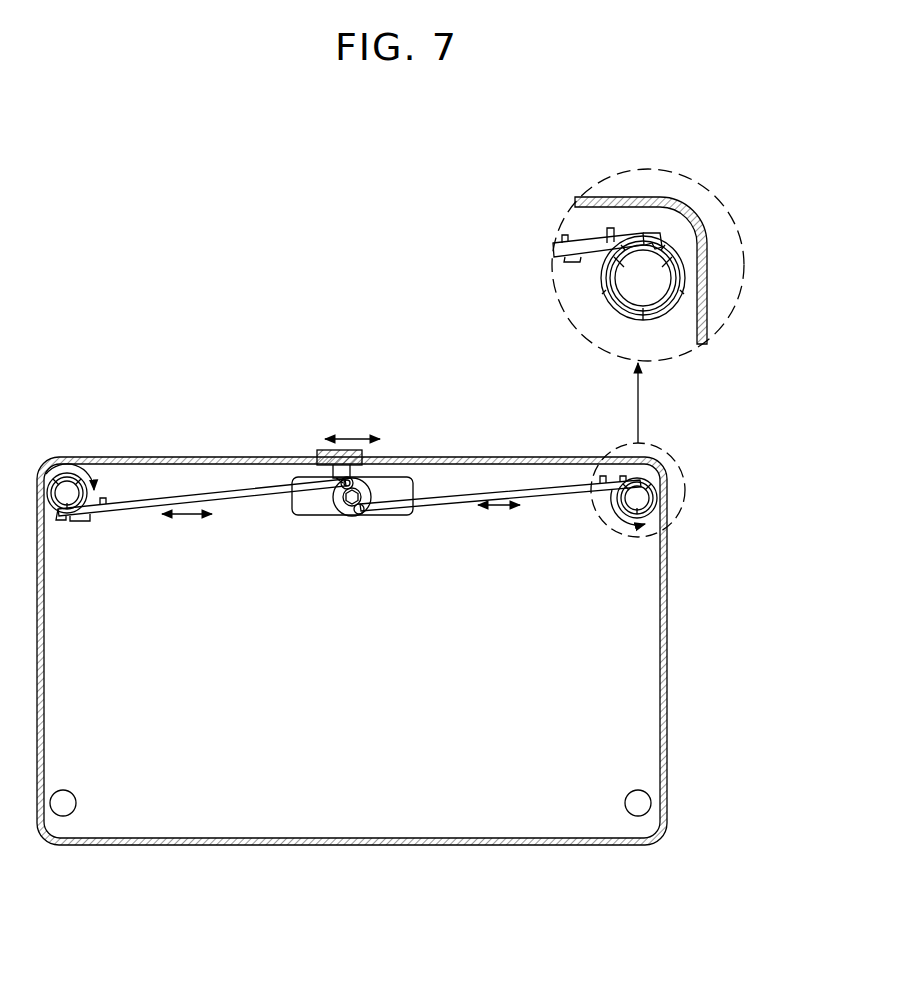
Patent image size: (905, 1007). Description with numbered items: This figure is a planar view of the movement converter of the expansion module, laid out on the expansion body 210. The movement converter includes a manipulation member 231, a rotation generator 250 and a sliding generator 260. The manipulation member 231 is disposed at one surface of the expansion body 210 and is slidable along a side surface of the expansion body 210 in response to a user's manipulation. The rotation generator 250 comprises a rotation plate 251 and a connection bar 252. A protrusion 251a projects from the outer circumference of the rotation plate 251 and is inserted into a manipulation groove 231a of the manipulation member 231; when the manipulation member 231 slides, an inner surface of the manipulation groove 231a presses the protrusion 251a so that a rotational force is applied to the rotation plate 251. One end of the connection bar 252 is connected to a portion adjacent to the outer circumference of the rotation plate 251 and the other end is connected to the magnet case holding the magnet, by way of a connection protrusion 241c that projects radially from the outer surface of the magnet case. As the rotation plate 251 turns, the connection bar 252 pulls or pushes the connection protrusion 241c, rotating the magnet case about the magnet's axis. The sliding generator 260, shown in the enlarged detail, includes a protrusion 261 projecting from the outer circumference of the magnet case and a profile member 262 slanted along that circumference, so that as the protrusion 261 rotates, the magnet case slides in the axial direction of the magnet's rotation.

The expansion body 210 is at (145, 447).
The manipulation member 231 is at (356, 478).
The manipulation groove 231a is at (320, 450).
The connection protrusion 241c is at (650, 240).
The rotation generator 250 is at (341, 530).
The rotation plate 251 is at (372, 494).
The protrusion 251a is at (325, 481).
The connection bar 252 is at (527, 492).
The sliding generator 260 is at (623, 526).
The protrusion 261 is at (680, 275).
The profile member 262 is at (683, 290).